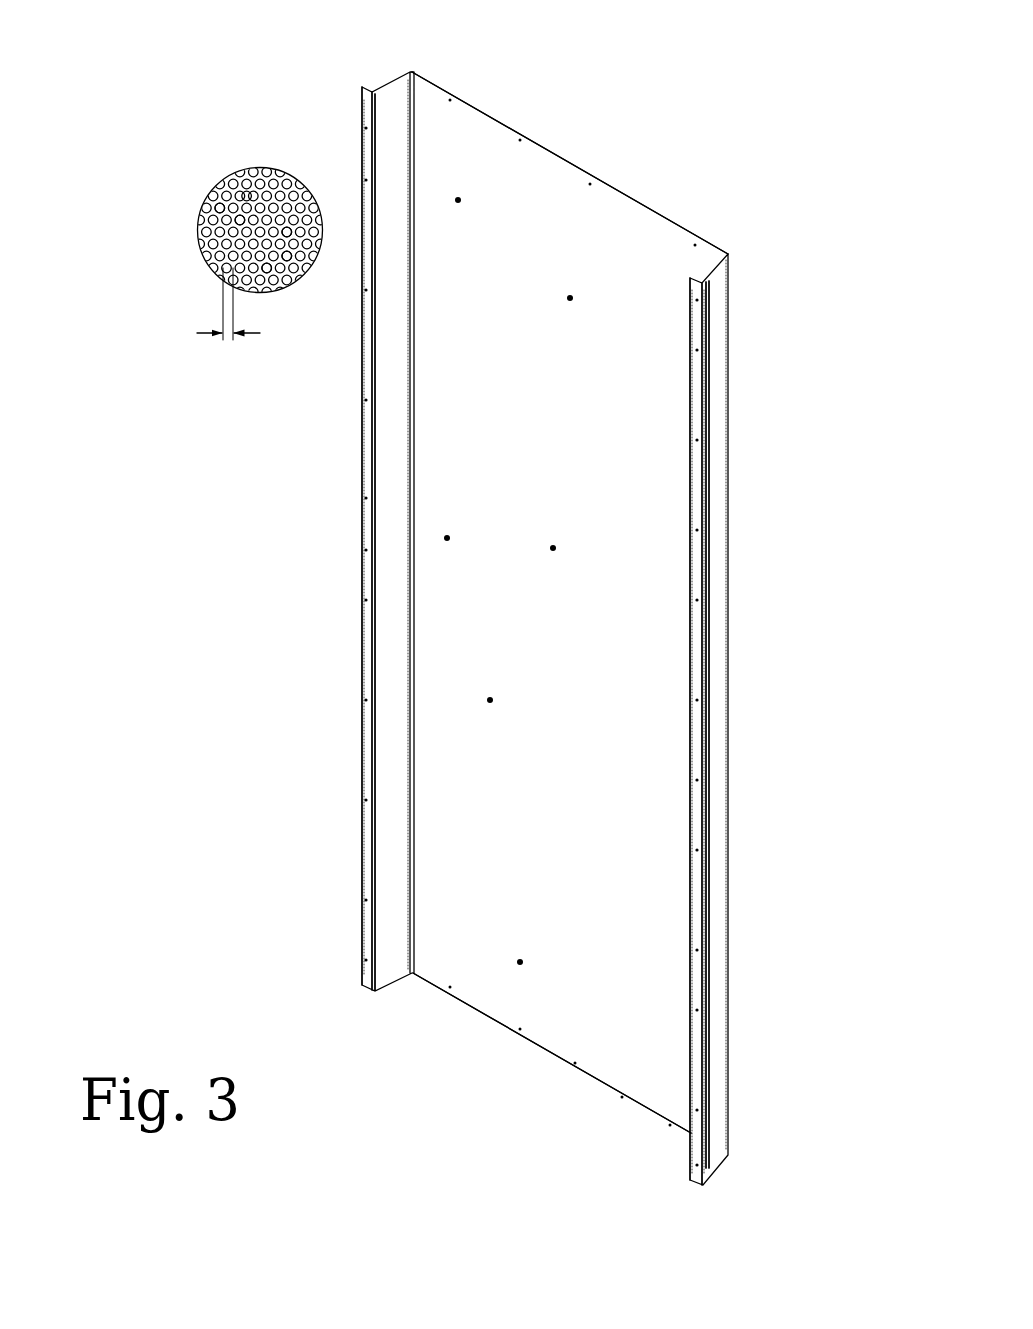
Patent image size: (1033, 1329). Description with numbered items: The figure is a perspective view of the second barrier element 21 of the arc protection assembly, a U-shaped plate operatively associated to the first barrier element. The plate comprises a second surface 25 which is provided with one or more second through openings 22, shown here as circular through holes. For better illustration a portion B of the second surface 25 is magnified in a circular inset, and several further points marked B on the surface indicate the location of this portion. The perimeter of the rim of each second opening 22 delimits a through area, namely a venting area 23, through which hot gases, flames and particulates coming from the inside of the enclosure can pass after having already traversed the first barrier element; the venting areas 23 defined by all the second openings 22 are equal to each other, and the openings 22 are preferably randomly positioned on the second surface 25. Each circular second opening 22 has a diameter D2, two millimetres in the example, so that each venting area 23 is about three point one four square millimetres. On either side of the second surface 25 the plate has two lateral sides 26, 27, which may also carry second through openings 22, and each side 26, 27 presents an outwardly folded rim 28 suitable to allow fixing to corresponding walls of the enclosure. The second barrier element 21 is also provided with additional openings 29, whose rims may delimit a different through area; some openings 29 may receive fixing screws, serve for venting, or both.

The second barrier element 21 is at (461, 602).
The second through openings 22 is at (283, 179).
The venting area 23 is at (238, 221).
The second surface 25 is at (446, 946).
The lateral side 26 is at (718, 268).
The lateral side 27 is at (397, 135).
The outwardly folded rim 28 is at (362, 749).
The openings 29 is at (390, 97).
The magnified portion B is at (199, 206).
The diameter of second opening D2 is at (220, 304).